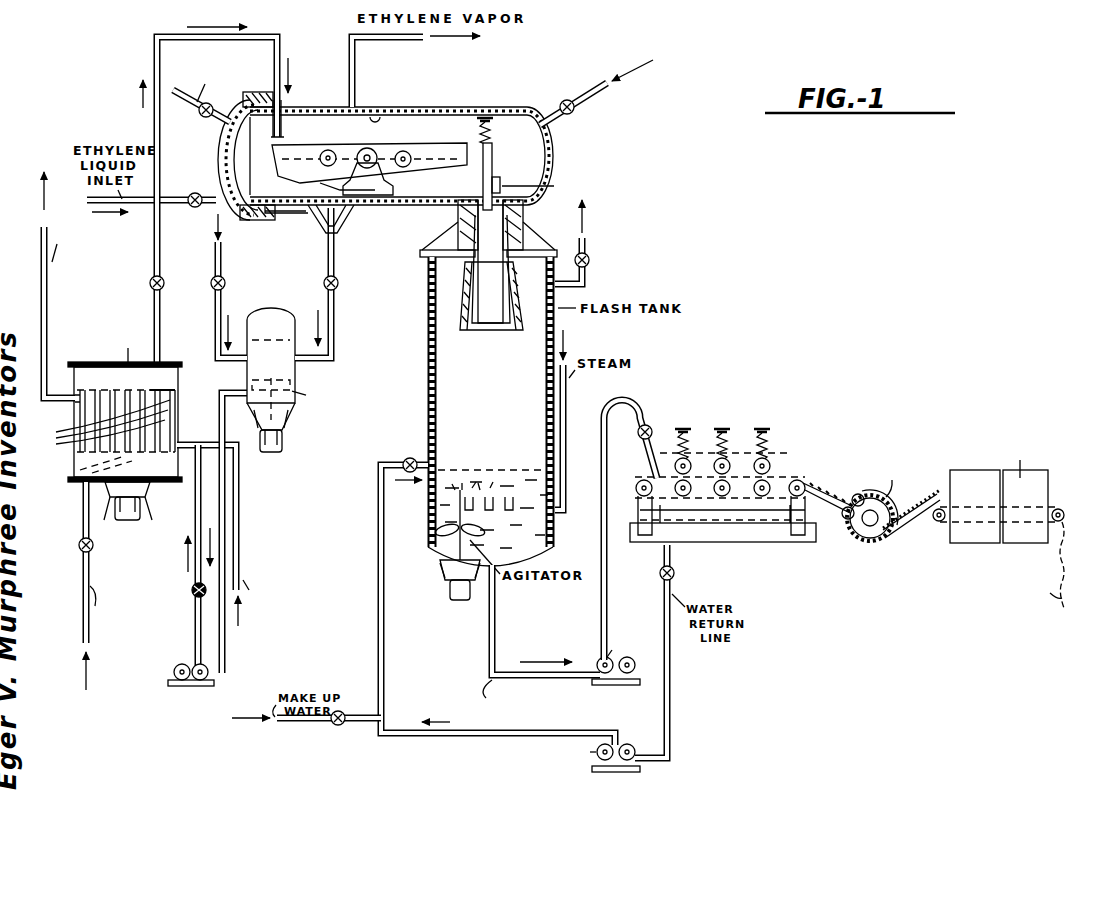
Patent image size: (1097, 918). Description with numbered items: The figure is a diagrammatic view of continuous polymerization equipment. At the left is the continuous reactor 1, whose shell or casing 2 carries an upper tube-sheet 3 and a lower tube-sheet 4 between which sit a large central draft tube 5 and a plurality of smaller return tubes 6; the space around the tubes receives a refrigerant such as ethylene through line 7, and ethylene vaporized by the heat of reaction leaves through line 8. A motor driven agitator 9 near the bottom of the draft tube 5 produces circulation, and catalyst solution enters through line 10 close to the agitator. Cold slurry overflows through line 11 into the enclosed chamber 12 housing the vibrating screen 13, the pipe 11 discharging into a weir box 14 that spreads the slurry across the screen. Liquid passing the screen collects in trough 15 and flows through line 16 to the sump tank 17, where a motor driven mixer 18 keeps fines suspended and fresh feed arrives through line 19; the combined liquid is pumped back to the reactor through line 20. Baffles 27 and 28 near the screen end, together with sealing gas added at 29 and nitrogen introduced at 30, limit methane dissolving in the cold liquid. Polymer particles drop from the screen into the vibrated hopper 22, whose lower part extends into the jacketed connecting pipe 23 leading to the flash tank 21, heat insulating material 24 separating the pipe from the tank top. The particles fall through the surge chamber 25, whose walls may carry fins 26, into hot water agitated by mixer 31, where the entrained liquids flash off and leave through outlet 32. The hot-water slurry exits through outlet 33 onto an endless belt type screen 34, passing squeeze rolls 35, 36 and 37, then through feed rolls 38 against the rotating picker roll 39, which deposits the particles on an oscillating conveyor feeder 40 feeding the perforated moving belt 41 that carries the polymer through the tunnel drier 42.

The continuous reactor 1 is at (180, 421).
The shell or casing 2 is at (75, 383).
The upper tube-sheet 3 is at (160, 392).
The lower tube-sheet 4 is at (78, 470).
The central draft tube 5 is at (132, 404).
The return tubes 6 is at (103, 422).
The refrigerant supply line 7 is at (243, 520).
The ethylene vapor outlet line 8 is at (48, 306).
The motor driven agitator 9 is at (143, 488).
The catalyst solution line 10 is at (90, 571).
The slurry overflow line 11 is at (155, 57).
The enclosed chamber 12 is at (378, 114).
The screen 13 is at (420, 156).
The weir box 14 is at (285, 128).
The trough 15 is at (312, 219).
The cold liquid line 16 is at (335, 353).
The sump tank 17 is at (292, 407).
The motor driven mixer 18 is at (271, 364).
The fresh feed line 19 is at (213, 326).
The feed return line 20 is at (228, 656).
The flash tank 21 is at (430, 444).
The hopper 22 is at (492, 166).
The connecting pipe 23 is at (522, 210).
The heat insulating material 24 is at (430, 248).
The surge chamber 25 is at (488, 298).
The fins 26 is at (465, 273).
The baffle 27 is at (452, 137).
The baffle 28 is at (455, 198).
The sealing gas inlet 29 is at (556, 112).
The nitrogen inlet 30 is at (209, 108).
The mixer 31 is at (440, 556).
The gas outlet 32 is at (587, 281).
The slurry outlet 33 is at (496, 640).
The endless belt type screen 34 is at (780, 478).
The squeeze rolls 35 is at (683, 497).
The squeeze rolls 36 is at (722, 497).
The squeeze rolls 37 is at (762, 497).
The feed rolls 38 is at (830, 518).
The picker roll 39 is at (862, 540).
The oscillating conveyor feeder 40 is at (911, 523).
The perforated moving belt 41 is at (939, 523).
The tunnel drier 42 is at (1021, 533).